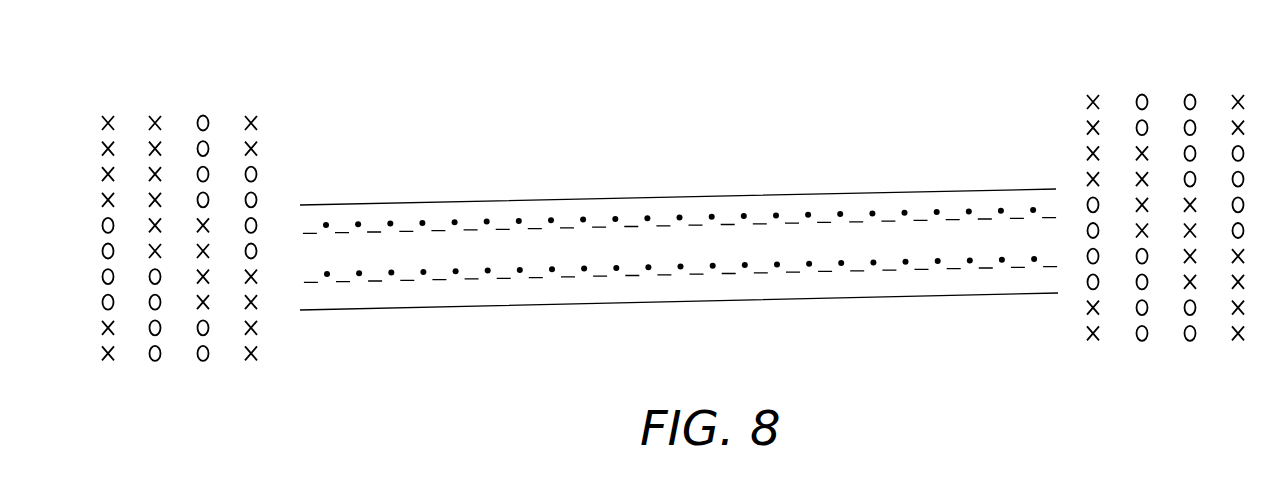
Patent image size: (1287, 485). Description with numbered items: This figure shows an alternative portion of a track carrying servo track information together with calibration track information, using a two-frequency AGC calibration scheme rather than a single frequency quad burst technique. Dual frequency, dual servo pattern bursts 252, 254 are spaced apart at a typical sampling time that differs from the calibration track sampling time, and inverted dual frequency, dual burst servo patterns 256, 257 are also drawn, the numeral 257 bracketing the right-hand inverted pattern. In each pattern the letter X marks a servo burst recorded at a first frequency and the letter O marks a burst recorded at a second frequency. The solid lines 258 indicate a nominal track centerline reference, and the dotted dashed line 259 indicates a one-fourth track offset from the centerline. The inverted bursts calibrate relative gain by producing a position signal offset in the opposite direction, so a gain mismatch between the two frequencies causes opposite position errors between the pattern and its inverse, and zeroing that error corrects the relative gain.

The dual frequency, dual servo pattern burst 252 is at (180, 382).
The dual frequency, dual servo pattern burst 254 is at (1165, 360).
The inverted dual frequency, dual burst servo pattern 256 is at (187, 90).
The second pair of sensor columns (right pattern) 257 is at (1172, 70).
The solid lines 258 is at (684, 196).
The dotted dashed line 259 is at (616, 267).